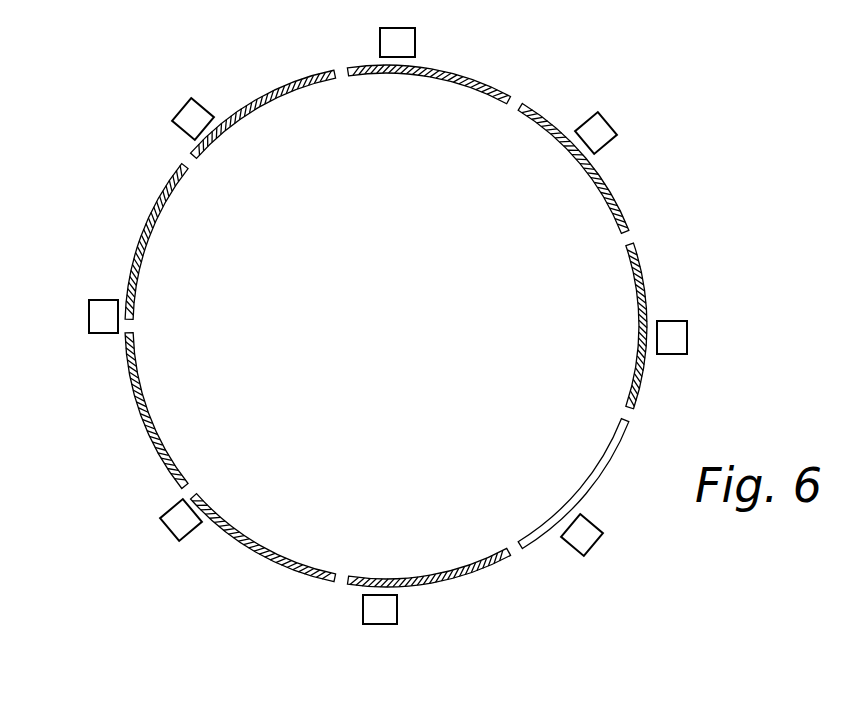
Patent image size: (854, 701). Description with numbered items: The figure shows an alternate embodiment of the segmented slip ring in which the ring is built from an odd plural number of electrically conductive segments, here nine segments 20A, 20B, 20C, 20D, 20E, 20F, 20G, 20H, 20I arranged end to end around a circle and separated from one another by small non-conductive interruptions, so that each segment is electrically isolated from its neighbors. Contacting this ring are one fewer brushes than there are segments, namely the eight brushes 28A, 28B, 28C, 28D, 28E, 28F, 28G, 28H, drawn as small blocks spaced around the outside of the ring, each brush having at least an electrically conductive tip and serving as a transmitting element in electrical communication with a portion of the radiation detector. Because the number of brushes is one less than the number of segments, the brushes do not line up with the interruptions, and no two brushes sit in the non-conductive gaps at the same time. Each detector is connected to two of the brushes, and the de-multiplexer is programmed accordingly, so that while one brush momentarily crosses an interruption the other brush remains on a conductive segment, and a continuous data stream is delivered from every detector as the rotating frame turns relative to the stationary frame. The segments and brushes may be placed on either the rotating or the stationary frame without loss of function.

The electrically conductive segment 20A is at (458, 82).
The electrically conductive segment 20B is at (246, 110).
The electrically conductive segment 20C is at (150, 230).
The electrically conductive segment 20D is at (148, 412).
The electrically conductive segment 20E is at (230, 528).
The electrically conductive segment 20F is at (420, 578).
The electrically conductive segment 20G is at (585, 490).
The electrically conductive segment 20H is at (640, 285).
The electrically conductive segment 20I is at (598, 176).
The brush 28A is at (415, 46).
The brush 28B is at (186, 103).
The brush 28C is at (89, 320).
The brush 28D is at (175, 535).
The brush 28E is at (363, 602).
The brush 28F is at (597, 545).
The brush 28G is at (687, 342).
The brush 28H is at (613, 127).